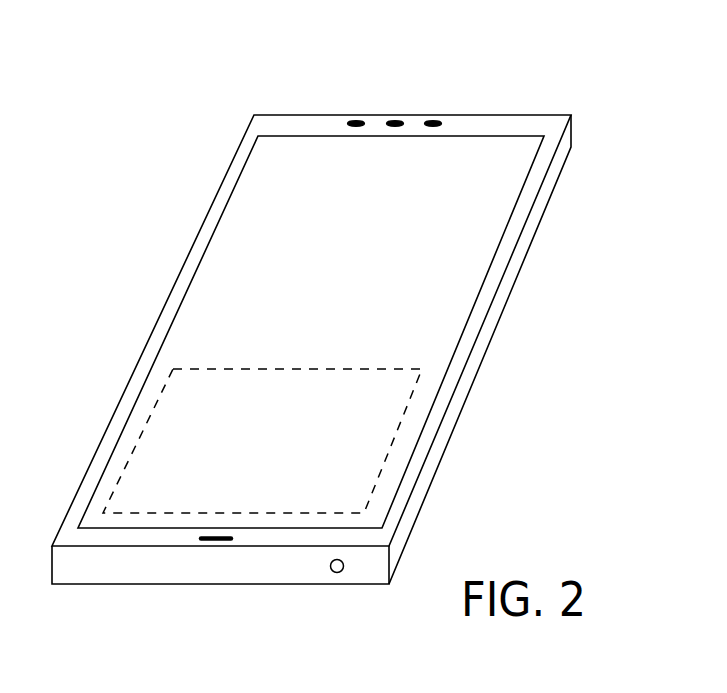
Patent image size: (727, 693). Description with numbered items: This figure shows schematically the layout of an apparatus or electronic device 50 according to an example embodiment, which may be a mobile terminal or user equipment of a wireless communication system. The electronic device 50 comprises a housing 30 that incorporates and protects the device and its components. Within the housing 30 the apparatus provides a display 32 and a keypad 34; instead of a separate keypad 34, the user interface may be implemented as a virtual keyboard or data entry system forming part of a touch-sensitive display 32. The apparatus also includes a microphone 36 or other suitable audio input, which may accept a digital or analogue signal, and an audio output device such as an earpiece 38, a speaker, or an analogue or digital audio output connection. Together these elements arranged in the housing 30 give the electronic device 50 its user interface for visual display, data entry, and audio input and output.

The housing 30 is at (274, 113).
The display 32 is at (461, 256).
The keypad 34 is at (374, 462).
The microphone 36 is at (222, 541).
The earpiece 38 is at (391, 117).
The electronic device 50 is at (598, 76).